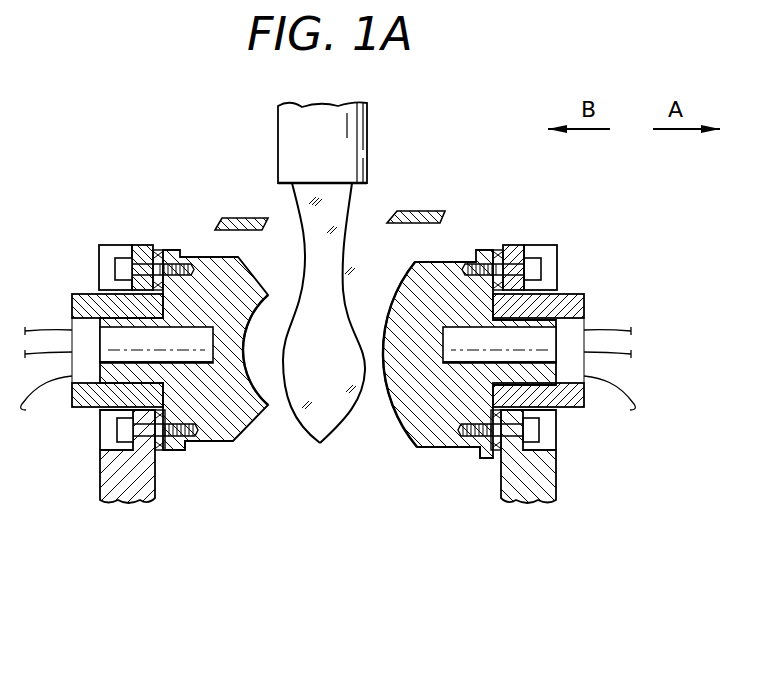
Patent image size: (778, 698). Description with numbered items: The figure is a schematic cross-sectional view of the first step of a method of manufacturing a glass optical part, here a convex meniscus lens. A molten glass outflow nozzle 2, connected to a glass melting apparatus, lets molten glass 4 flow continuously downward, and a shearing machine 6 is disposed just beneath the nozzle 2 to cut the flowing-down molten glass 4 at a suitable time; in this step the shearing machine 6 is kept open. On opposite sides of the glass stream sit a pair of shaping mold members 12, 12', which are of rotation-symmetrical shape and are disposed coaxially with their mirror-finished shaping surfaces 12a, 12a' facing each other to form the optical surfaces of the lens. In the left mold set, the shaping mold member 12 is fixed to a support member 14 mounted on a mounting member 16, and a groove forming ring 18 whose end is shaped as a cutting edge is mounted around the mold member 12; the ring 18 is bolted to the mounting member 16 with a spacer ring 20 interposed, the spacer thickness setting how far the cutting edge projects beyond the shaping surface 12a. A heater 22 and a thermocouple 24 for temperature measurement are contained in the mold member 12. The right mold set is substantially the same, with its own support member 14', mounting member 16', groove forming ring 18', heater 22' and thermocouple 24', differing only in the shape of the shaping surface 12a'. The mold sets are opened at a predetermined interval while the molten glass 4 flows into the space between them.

The molten glass outflow nozzle 2 is at (340, 140).
The molten glass 4 is at (335, 257).
The shearing machine 6 is at (248, 218).
The shaping mold member 12 is at (184, 326).
The shaping mold member 12' is at (469, 332).
The shaping surface 12a is at (270, 386).
The shaping surface 12a' is at (384, 370).
The support member 14 is at (110, 265).
The support member 14' is at (558, 268).
The mounting member 16 is at (109, 456).
The mounting member 16' is at (551, 456).
The groove forming ring 18 is at (201, 464).
The groove forming ring 18' is at (454, 461).
The spacer ring 20 is at (157, 453).
The heater 22 is at (92, 344).
The heater 22' is at (575, 351).
The thermocouple 24 is at (211, 346).
The thermocouple 24' is at (434, 356).